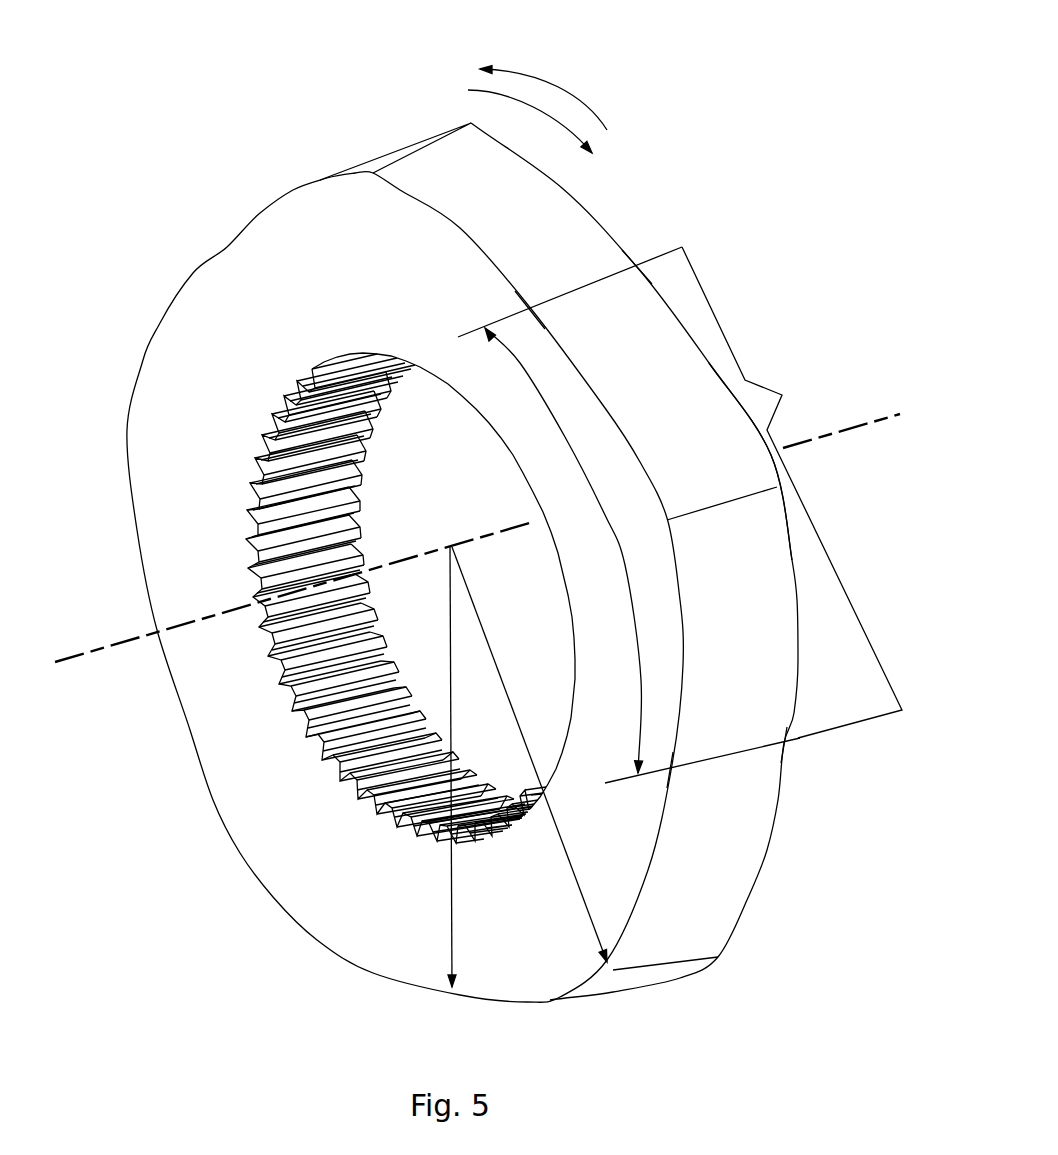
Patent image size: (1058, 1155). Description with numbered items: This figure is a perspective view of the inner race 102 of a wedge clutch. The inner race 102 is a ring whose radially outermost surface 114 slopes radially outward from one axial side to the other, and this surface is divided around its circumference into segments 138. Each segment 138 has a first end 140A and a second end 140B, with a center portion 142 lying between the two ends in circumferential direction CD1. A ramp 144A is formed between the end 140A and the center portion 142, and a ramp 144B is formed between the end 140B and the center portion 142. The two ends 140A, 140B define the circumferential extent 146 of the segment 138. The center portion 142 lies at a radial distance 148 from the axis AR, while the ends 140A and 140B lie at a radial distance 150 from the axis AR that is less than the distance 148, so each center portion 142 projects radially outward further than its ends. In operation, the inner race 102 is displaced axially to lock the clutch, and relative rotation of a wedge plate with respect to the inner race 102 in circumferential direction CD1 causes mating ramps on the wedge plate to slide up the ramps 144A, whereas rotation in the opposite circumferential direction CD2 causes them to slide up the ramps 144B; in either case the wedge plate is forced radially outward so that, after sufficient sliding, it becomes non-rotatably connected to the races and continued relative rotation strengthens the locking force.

The inner race 102 is at (758, 62).
The radially outermost surface 114 is at (193, 270).
The segment 138 is at (782, 395).
The end 140A is at (530, 310).
The end 140B is at (783, 745).
The center portion 142 is at (707, 507).
The ramp 144A is at (643, 334).
The ramp 144B is at (757, 592).
The circumferential extent 146 is at (623, 557).
The radial distance 148 is at (584, 900).
The radial distance 150 is at (450, 892).
The axis AR is at (87, 652).
The circumferential direction CD1 is at (472, 88).
The circumferential direction CD2 is at (550, 80).